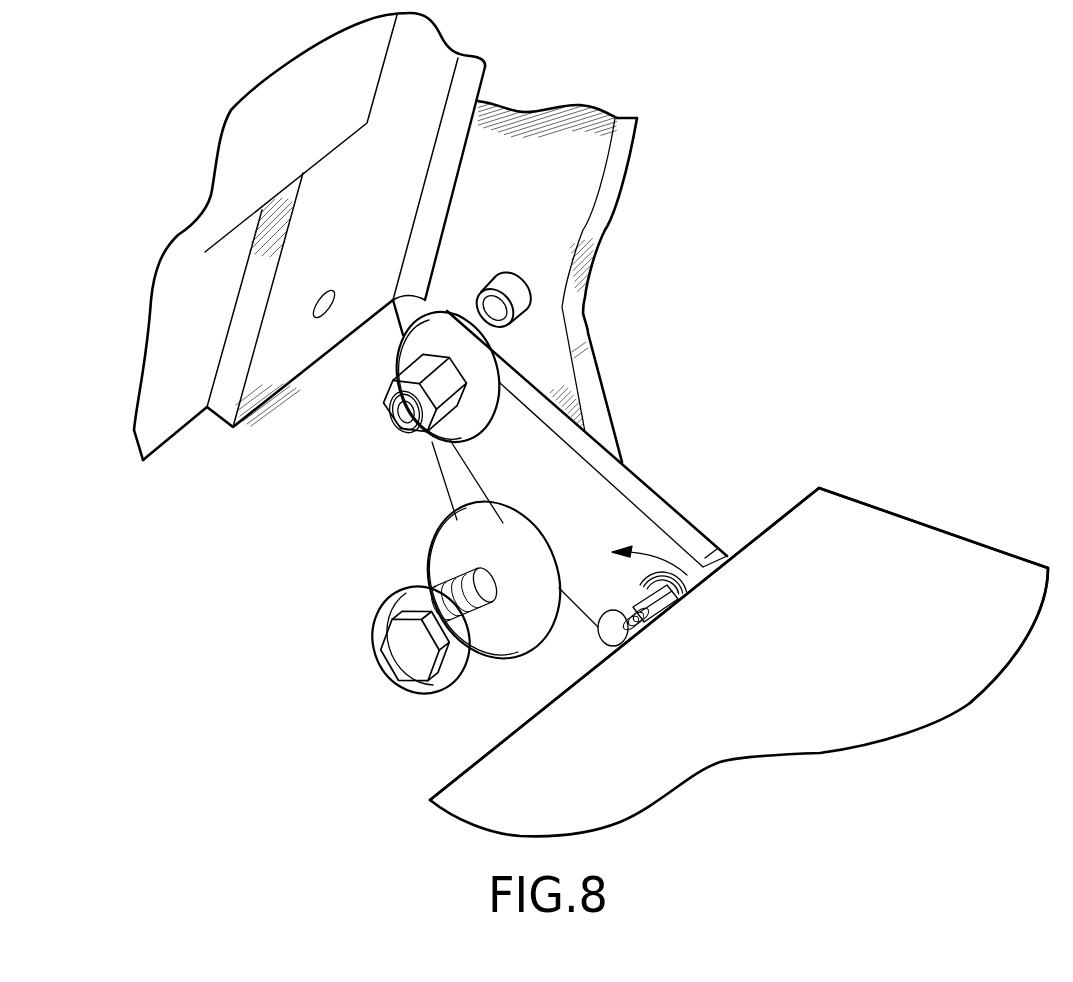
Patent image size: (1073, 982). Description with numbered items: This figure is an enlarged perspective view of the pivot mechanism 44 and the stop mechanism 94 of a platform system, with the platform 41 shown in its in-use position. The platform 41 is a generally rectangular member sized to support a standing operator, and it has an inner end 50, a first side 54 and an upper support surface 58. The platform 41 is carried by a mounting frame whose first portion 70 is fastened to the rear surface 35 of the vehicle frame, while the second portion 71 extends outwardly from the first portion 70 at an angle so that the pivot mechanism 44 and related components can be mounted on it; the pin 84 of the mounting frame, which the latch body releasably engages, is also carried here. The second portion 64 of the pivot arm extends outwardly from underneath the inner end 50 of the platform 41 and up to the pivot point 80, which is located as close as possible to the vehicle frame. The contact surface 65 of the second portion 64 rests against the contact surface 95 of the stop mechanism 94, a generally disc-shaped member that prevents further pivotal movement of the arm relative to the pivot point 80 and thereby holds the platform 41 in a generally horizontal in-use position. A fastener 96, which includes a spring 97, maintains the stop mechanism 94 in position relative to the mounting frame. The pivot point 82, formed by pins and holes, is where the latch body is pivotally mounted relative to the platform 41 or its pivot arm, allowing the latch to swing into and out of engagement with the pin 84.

The rear surface 35 is at (170, 350).
The first portion 70 is at (338, 216).
The second portion 71 is at (466, 243).
The pin 84 is at (511, 288).
The second portion 64 is at (503, 477).
The contact surface 65 is at (517, 520).
The pivot point 80 is at (395, 428).
The contact surface 95 is at (470, 508).
The stop mechanism 94 is at (501, 639).
The fastener 96 is at (406, 657).
The spring 97 is at (437, 593).
The platform 41 is at (843, 507).
The inner end 50 is at (507, 739).
The first side 54 is at (933, 535).
The upper support surface 58 is at (619, 744).
The pivot mechanism 44 is at (700, 584).
The pivot point 82 is at (598, 642).